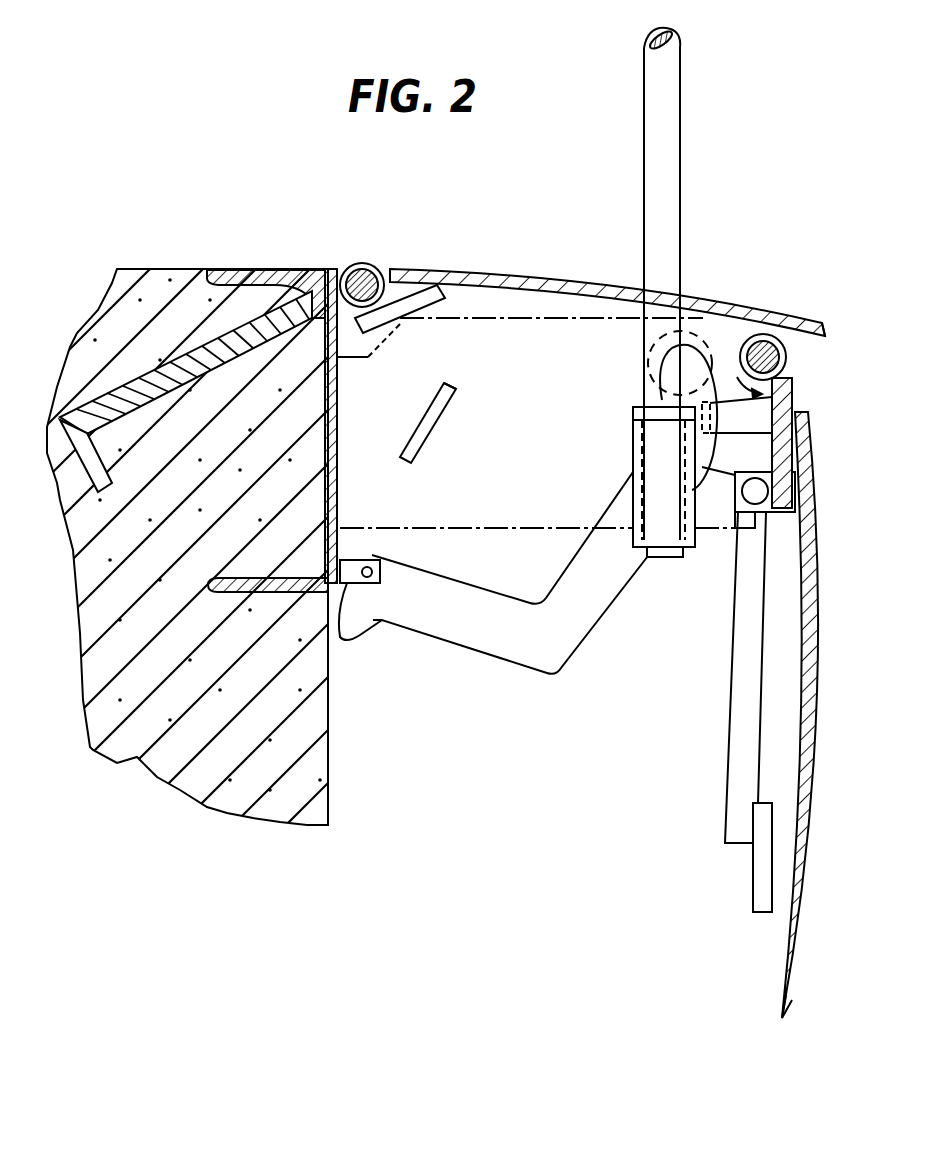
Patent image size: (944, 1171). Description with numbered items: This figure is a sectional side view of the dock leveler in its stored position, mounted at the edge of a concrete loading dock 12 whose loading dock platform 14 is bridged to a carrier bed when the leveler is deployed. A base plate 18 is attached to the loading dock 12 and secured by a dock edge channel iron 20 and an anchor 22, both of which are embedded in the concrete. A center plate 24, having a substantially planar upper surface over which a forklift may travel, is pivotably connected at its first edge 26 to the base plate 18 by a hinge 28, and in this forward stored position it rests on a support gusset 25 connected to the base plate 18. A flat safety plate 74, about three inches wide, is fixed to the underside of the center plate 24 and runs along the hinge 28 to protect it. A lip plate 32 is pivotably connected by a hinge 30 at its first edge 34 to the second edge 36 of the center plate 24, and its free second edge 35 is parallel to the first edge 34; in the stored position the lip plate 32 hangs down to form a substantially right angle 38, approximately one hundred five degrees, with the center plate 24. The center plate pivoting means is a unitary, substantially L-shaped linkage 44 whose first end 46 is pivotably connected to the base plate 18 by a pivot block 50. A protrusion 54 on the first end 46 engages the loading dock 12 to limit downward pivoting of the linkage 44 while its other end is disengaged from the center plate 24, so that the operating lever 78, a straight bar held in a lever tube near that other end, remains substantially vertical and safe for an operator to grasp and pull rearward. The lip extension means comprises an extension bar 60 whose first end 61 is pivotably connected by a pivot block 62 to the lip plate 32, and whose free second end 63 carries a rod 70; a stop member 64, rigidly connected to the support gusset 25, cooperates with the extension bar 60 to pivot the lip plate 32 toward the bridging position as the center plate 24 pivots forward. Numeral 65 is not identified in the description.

The loading dock 12 is at (233, 738).
The loading dock platform 14 is at (117, 268).
The base plate 18 is at (327, 595).
The dock edge channel iron 20 is at (245, 592).
The anchor 22 is at (187, 373).
The center plate 24 is at (570, 278).
The support gusset 25 is at (528, 530).
The first edge 26 is at (398, 268).
The hinge 28 is at (347, 276).
The hinge 30 is at (787, 357).
The lip plate 32 is at (818, 710).
The first edge 34 is at (808, 435).
The second edge 35 is at (802, 975).
The second edge 36 is at (802, 320).
The substantially right angle 38 is at (713, 320).
The linkage 44 is at (567, 665).
The first end 46 is at (373, 623).
The pivot block 50 is at (352, 560).
The protrusion 54 is at (347, 583).
The extension bar 60 is at (730, 660).
The first end 61 is at (733, 537).
The pivot block 62 is at (768, 490).
The second end 63 is at (728, 843).
The stop member 64 is at (422, 450).
The bracket end 65 is at (450, 387).
The rod 70 is at (757, 912).
The safety plate 74 is at (430, 287).
The operating lever 78 is at (680, 238).